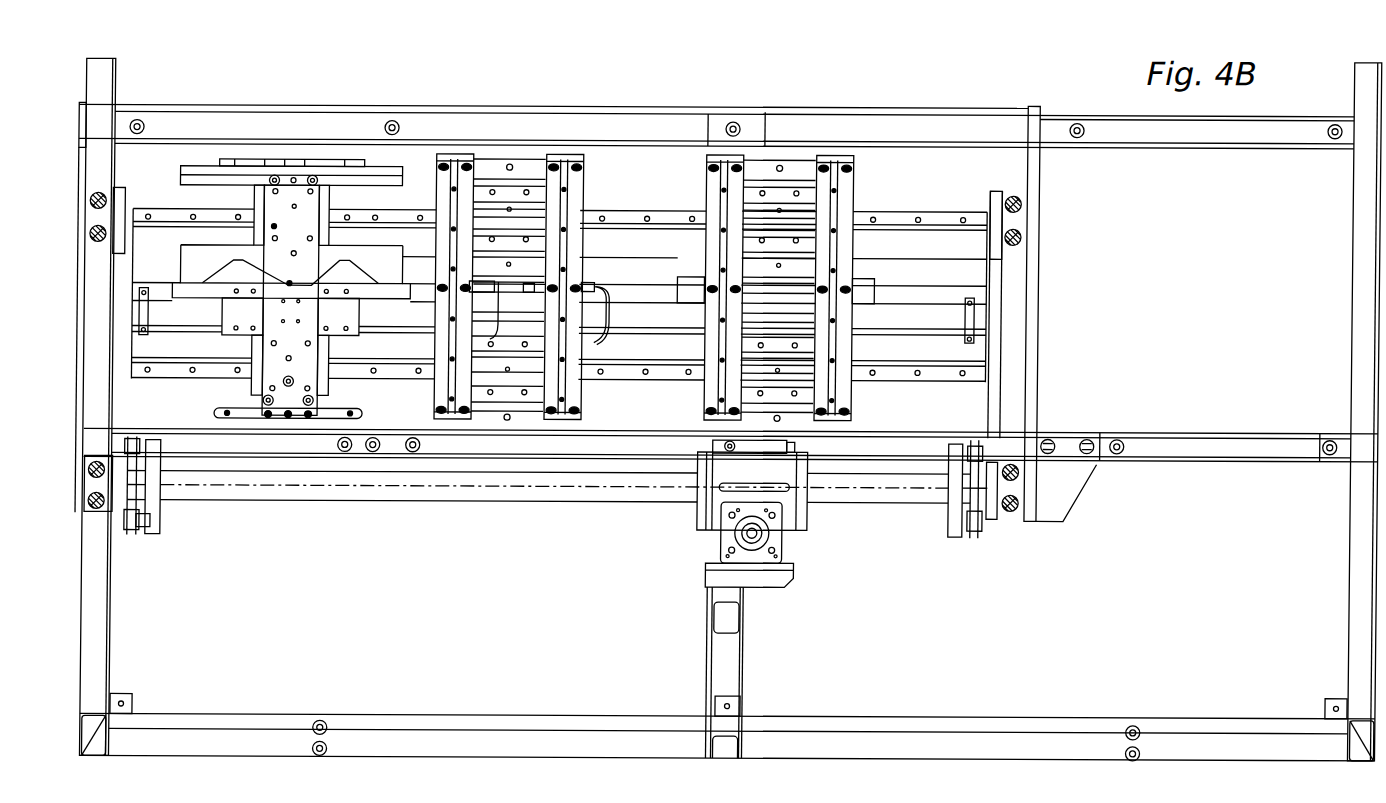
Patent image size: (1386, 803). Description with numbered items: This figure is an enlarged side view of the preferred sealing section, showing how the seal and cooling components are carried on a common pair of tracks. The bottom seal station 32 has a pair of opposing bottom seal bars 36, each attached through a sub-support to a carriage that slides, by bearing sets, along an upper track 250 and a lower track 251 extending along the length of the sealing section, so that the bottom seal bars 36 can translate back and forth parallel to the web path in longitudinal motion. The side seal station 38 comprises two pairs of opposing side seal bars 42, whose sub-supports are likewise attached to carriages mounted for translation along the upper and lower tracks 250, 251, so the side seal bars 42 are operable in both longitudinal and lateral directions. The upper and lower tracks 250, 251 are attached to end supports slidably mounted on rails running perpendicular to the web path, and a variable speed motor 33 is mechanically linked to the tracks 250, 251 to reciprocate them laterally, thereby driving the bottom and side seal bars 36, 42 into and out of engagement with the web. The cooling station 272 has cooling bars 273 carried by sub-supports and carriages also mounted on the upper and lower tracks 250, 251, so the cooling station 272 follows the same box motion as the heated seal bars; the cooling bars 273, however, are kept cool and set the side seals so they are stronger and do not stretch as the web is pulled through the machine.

The bottom seal bars 36 is at (196, 255).
The bottom seal station 32 is at (322, 140).
The side seal station 38 is at (510, 140).
The side seal bars 42 is at (445, 238).
The upper track 250 is at (677, 214).
The lower track 251 is at (672, 372).
The cooling station 272 is at (778, 145).
The cooling bars 273 is at (703, 178).
The variable speed motor 33 is at (755, 548).